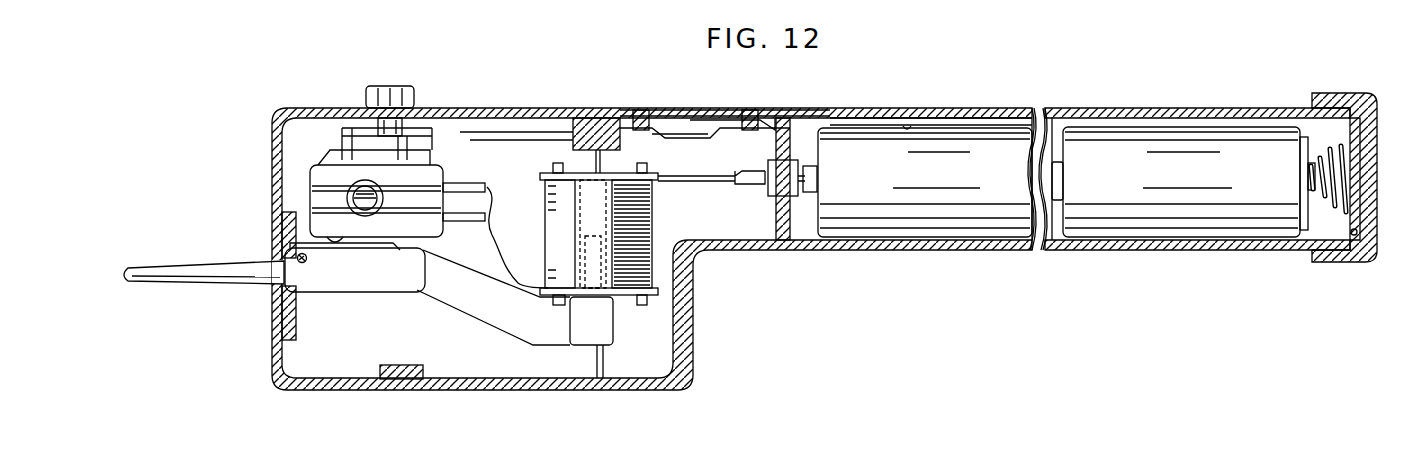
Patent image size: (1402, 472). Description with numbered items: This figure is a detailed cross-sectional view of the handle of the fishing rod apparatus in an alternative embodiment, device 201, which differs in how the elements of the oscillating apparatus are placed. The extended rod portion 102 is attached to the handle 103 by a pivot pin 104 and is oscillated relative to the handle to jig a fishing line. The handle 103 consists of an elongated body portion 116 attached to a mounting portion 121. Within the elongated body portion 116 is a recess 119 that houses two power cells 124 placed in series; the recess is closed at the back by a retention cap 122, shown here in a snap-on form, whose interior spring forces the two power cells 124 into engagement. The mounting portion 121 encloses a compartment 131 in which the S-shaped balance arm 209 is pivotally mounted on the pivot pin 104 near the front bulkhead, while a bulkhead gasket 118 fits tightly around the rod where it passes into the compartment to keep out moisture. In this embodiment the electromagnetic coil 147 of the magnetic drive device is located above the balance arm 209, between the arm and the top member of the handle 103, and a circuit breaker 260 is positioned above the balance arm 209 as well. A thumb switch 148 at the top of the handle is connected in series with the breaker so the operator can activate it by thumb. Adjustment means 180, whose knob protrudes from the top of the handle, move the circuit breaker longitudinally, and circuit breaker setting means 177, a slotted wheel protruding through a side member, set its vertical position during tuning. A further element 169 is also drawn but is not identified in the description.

The extended rod portion 102 is at (160, 284).
The handle 103 is at (1086, 108).
The pivot pin 104 is at (297, 258).
The elongated body portion 116 is at (1050, 252).
The bulkhead gasket 118 is at (278, 302).
The recess 119 is at (1317, 226).
The mounting portion 121 is at (564, 393).
The retention cap 122 is at (1340, 92).
The power cell 124 is at (955, 140).
The enclosed compartment 131 is at (338, 362).
The electromagnetic coil 147 is at (655, 217).
The thumb switch 148 is at (695, 110).
The contact 169 is at (909, 127).
The circuit breaker setting means 177 is at (350, 186).
The adjustment means 180 is at (411, 97).
The device 201 is at (857, 100).
The S-shaped balance arm 209 is at (461, 313).
The circuit breaker 260 is at (447, 176).